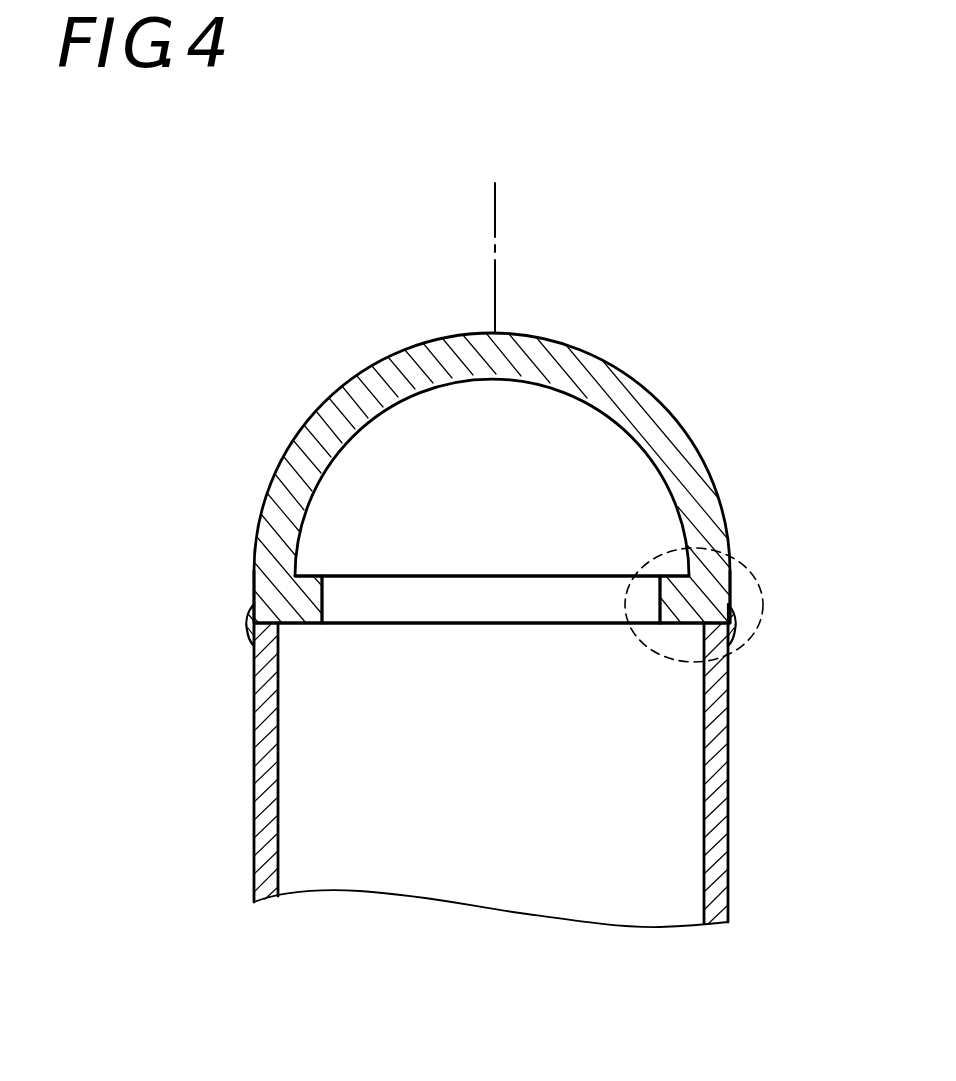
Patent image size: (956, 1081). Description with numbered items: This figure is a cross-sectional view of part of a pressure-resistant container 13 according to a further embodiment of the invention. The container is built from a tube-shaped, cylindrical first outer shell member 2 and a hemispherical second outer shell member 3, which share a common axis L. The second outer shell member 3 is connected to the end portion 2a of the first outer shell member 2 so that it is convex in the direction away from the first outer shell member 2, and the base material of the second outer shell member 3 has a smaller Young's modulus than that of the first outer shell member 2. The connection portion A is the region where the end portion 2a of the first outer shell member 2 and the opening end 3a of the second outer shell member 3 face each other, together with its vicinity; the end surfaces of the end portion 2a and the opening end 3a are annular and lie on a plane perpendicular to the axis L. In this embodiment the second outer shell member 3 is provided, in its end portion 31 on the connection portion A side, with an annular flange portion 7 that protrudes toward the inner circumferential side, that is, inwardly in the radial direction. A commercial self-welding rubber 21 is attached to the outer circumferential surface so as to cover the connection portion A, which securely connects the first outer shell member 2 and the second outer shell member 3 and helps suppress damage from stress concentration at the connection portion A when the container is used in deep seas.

The pressure-resistant container 13 is at (337, 150).
The axis L is at (497, 216).
The second outer shell member 3 is at (688, 483).
The opening end 3a is at (263, 605).
The end portion 31 is at (685, 598).
The annular flange portion 7 is at (310, 583).
The connection portion A is at (763, 598).
The first outer shell member 2 is at (713, 682).
The end portion 2a is at (277, 653).
The self-welding rubber 21 is at (250, 627).